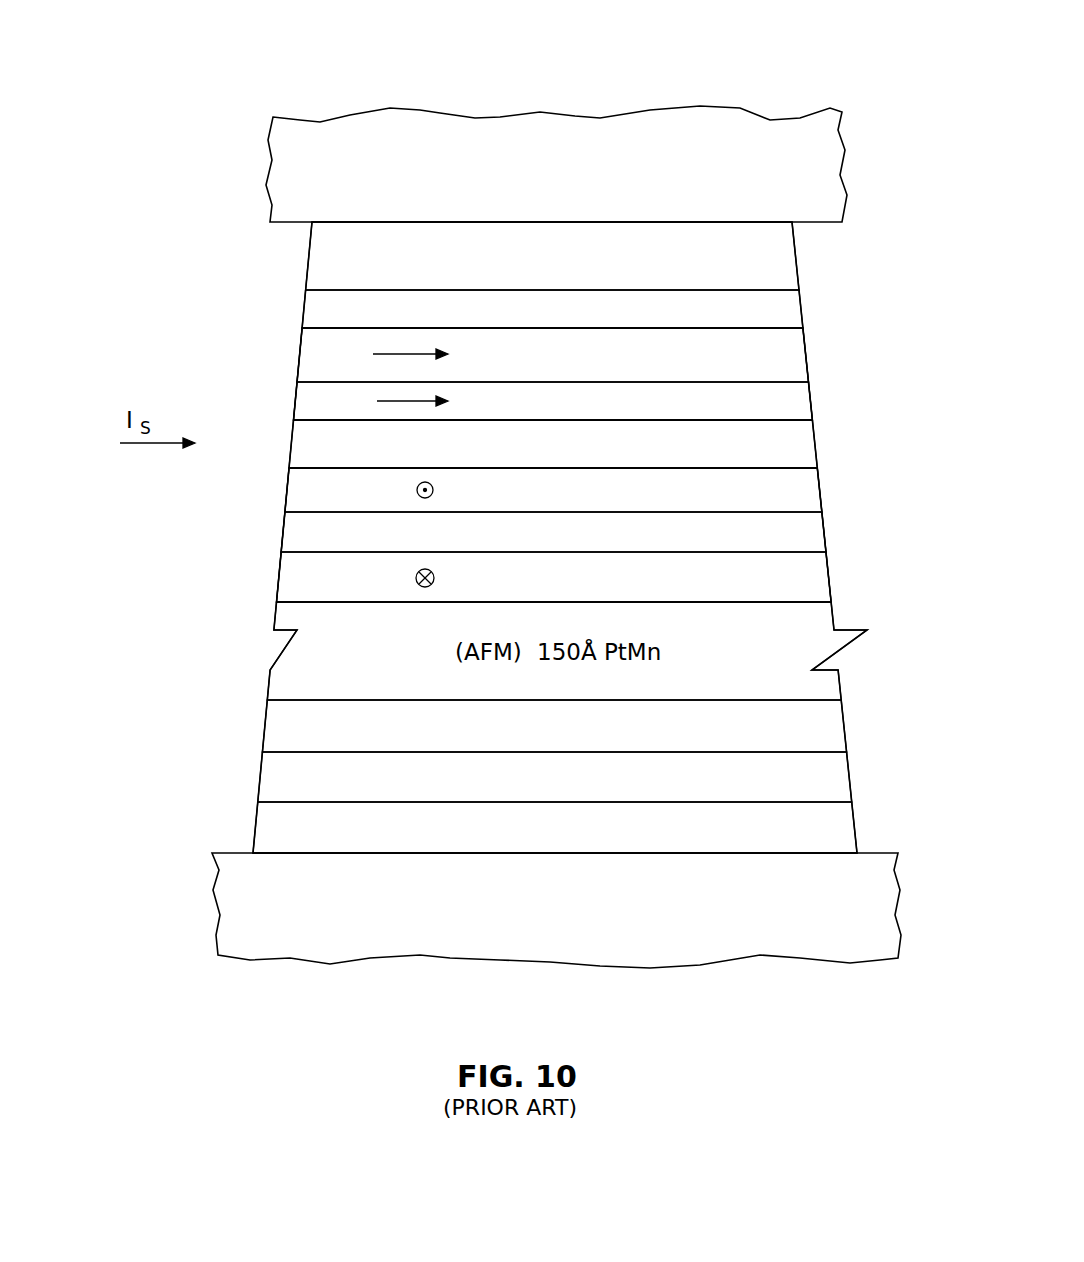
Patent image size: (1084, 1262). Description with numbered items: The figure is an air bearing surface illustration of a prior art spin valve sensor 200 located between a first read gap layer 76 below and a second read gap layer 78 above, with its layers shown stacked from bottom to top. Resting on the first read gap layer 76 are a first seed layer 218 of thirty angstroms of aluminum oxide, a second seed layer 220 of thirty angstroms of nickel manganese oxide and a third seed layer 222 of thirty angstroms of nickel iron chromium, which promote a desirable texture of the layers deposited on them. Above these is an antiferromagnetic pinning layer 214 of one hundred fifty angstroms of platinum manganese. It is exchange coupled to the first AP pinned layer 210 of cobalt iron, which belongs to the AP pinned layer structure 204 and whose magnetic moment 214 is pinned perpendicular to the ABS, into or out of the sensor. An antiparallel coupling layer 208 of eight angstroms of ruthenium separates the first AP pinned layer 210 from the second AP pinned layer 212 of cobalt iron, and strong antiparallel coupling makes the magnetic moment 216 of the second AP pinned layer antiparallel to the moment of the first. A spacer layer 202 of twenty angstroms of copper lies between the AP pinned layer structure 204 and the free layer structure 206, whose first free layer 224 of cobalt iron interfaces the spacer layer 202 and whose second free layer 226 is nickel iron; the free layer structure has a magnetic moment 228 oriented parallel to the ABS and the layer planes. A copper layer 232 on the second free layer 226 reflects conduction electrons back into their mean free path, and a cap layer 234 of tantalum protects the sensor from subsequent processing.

The second read gap layer 78 is at (832, 142).
The first read gap layer 76 is at (850, 950).
The spin valve sensor 200 is at (88, 853).
The free layer structure 206 is at (213, 420).
The antiparallel pinned layer structure 204 is at (152, 468).
The cap layer 234 is at (796, 262).
The copper layer 232 is at (803, 312).
The second free layer 226 is at (806, 354).
The first free layer 224 is at (811, 399).
The magnetic moment of the free layer structure 228 is at (415, 401).
The spacer layer 202 is at (816, 447).
The second AP pinned layer 212 is at (820, 485).
The magnetic moment of the second AP pinned layer 216 is at (413, 492).
The antiparallel coupling layer 208 is at (824, 530).
The first AP pinned layer 210 is at (829, 573).
The antiferromagnetic pinning layer 214 is at (413, 580).
The third seed layer 222 is at (843, 717).
The second seed layer 220 is at (849, 775).
The first seed layer 218 is at (854, 823).